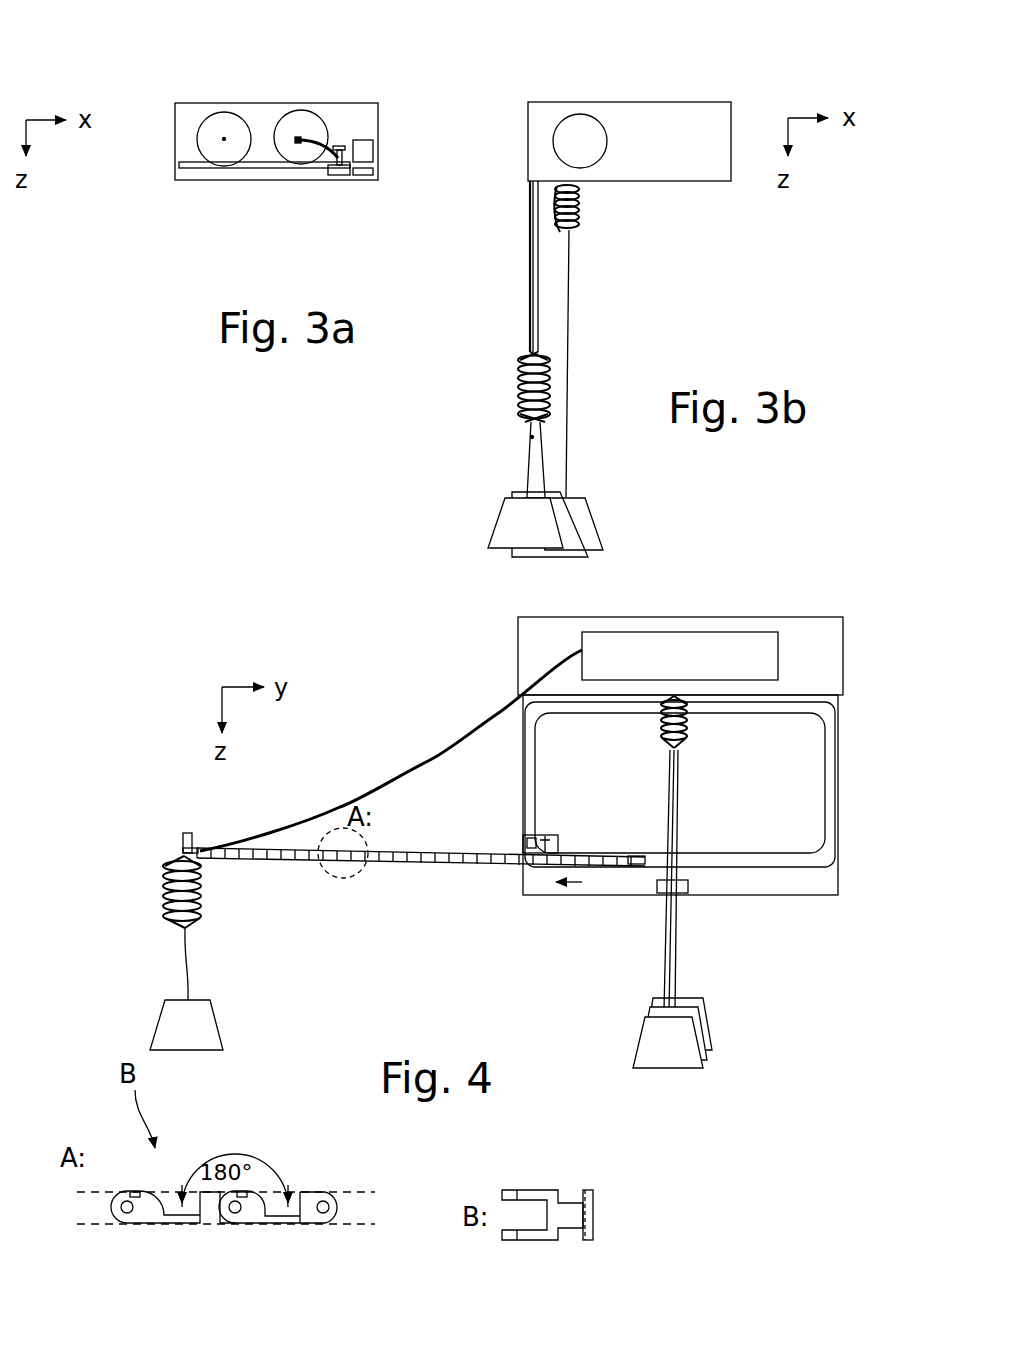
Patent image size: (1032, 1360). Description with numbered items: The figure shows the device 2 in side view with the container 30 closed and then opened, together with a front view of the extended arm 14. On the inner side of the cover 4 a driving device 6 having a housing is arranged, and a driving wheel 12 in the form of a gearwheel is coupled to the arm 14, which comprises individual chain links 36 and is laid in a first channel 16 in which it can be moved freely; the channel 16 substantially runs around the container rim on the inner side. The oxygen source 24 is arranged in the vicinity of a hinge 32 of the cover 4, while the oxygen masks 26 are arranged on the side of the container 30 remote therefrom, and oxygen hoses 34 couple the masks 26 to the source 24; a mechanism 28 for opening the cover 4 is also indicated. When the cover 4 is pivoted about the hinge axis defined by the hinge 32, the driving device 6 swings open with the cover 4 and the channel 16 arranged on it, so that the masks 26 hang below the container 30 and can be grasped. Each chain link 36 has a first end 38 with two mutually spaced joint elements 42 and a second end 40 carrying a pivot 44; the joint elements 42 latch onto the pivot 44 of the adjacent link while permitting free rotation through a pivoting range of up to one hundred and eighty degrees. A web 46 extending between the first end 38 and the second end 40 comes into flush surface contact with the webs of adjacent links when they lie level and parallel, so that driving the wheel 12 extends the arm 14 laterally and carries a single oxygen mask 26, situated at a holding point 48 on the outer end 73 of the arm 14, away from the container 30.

In FIG. 3A, the textile machine / yarn handling device 2 is at (157, 78).
In FIG. 3B, the textile machine / yarn handling device 2 is at (668, 78).
In FIG. 4, the textile machine / yarn handling device 2 is at (718, 600).
In FIG. 3A, the cover 4 is at (265, 170).
In FIG. 3B, the cover 4 is at (532, 293).
In FIG. 4, the cover 4 is at (793, 883).
In FIG. 3A, the driving device 6 is at (340, 176).
In FIG. 4, the driving wheel 12 is at (520, 843).
In FIG. 4, the arm 14 is at (447, 864).
In FIG. 3A, the first channel 16 is at (193, 165).
In FIG. 3B, the first channel 16 is at (535, 240).
In FIG. 4, the first channel 16 is at (833, 783).
In FIG. 3A, the oxygen source 24 is at (232, 120).
In FIG. 3B, the oxygen source 24 is at (572, 133).
In FIG. 4, the oxygen source 24 is at (666, 670).
In FIG. 3A, the oxygen masks 26 is at (302, 120).
In FIG. 3B, the oxygen masks 26 is at (510, 525).
In FIG. 4, the oxygen masks 26 is at (198, 1022).
In FIG. 4, the mechanism 28 is at (659, 895).
In FIG. 3A, the container 30 is at (340, 103).
In FIG. 3B, the container 30 is at (687, 102).
In FIG. 3A, the hinge 32 is at (175, 180).
In FIG. 3B, the hinge 32 is at (527, 182).
In FIG. 3A, the oxygen hoses 34 is at (333, 143).
In FIG. 4, the oxygen hoses 34 is at (422, 760).
In FIG. 4, the chain link 36 is at (178, 1195).
In FIG. 4, the first end 38 is at (128, 1230).
In FIG. 4, the second end 40 is at (227, 1230).
In FIG. 4, the joint elements 42 is at (133, 1193).
In FIG. 4, the pivot 44 is at (237, 1193).
In FIG. 4, the web 46 is at (557, 1224).
In FIG. 4, the holding point 48 is at (183, 845).
In FIG. 4, the outer end 73 is at (185, 812).